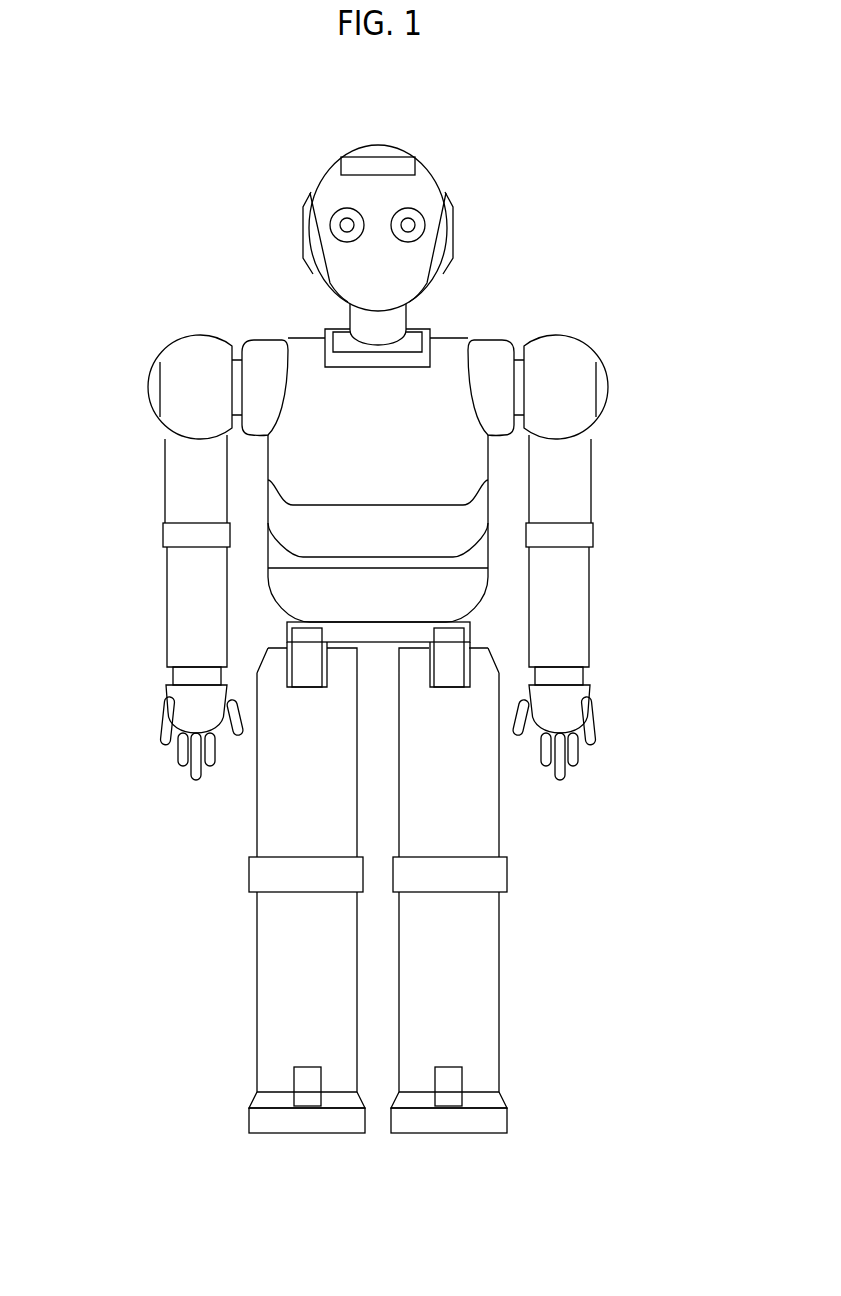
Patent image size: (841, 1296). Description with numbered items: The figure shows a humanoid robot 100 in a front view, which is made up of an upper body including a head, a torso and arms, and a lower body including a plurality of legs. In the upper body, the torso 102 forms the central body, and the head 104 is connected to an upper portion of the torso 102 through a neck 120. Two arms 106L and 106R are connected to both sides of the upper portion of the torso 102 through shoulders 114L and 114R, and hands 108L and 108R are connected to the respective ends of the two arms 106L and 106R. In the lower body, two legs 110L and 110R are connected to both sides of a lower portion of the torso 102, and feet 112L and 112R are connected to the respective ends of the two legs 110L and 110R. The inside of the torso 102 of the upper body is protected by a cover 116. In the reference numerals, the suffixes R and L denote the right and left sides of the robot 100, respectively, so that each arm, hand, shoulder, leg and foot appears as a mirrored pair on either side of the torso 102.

The robot 100 is at (582, 165).
The torso 102 is at (490, 505).
The head 104 is at (430, 160).
The right arm 106R is at (142, 527).
The left arm 106L is at (615, 608).
The right hand 108R is at (178, 705).
The left hand 108L is at (578, 705).
The right leg 110R is at (208, 852).
The left leg 110L is at (548, 852).
The right foot 112R is at (253, 1113).
The left foot 112L is at (503, 1113).
The right shoulder 114R is at (216, 315).
The left shoulder 114L is at (540, 315).
The cover 116 is at (488, 458).
The neck 120 is at (415, 315).